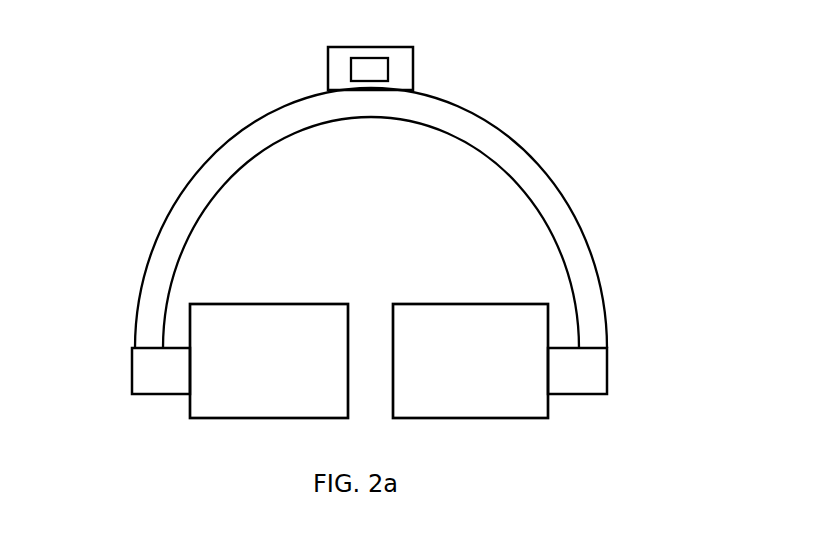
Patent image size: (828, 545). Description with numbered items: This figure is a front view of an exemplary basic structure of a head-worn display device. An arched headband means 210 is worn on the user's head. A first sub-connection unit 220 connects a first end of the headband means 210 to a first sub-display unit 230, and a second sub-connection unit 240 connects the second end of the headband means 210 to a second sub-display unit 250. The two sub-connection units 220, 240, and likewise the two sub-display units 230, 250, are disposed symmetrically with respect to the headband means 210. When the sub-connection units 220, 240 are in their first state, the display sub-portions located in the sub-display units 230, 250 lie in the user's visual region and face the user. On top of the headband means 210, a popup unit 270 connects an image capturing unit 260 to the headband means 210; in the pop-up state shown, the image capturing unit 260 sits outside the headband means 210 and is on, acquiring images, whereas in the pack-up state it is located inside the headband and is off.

The headband means 210 is at (547, 188).
The first sub-connection unit 220 is at (140, 371).
The first sub-display unit 230 is at (269, 361).
The second sub-connection unit 240 is at (590, 371).
The second sub-display unit 250 is at (470, 361).
The image capturing unit 260 is at (371, 53).
The popup unit 270 is at (413, 68).